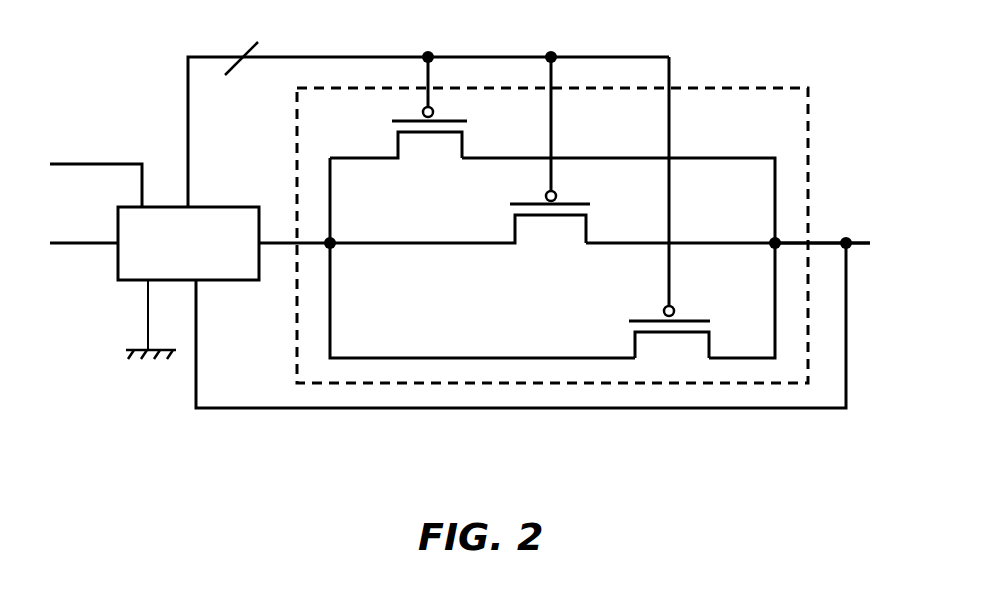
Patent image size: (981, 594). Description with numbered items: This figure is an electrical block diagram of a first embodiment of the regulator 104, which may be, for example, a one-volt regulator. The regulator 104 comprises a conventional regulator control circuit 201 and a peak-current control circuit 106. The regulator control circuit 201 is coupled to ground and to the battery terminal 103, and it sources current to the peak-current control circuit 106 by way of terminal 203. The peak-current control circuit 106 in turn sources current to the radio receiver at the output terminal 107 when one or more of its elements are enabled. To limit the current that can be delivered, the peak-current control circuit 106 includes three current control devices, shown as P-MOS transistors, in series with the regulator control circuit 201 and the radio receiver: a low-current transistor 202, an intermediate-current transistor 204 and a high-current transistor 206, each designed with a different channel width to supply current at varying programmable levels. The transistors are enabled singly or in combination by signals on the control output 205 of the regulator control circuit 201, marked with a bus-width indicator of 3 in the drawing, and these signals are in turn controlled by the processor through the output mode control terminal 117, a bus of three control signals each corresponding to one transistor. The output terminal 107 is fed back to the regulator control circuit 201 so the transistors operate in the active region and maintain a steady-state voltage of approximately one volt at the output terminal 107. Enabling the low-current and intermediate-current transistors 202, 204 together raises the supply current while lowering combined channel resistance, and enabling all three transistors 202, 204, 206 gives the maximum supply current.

The regulator 104 is at (460, 258).
The regulator control circuit 201 is at (207, 205).
The output mode control terminal 117 is at (101, 166).
The battery terminal 103 is at (93, 247).
The terminal 203 is at (285, 248).
The control output 205 is at (354, 57).
The bus width indicator 3 is at (241, 52).
The peak-current control circuit 106 is at (705, 86).
The low-current transistor 202 is at (397, 148).
The intermediate-current transistor 204 is at (513, 229).
The high-current transistor 206 is at (635, 347).
The output terminal 107 is at (820, 240).